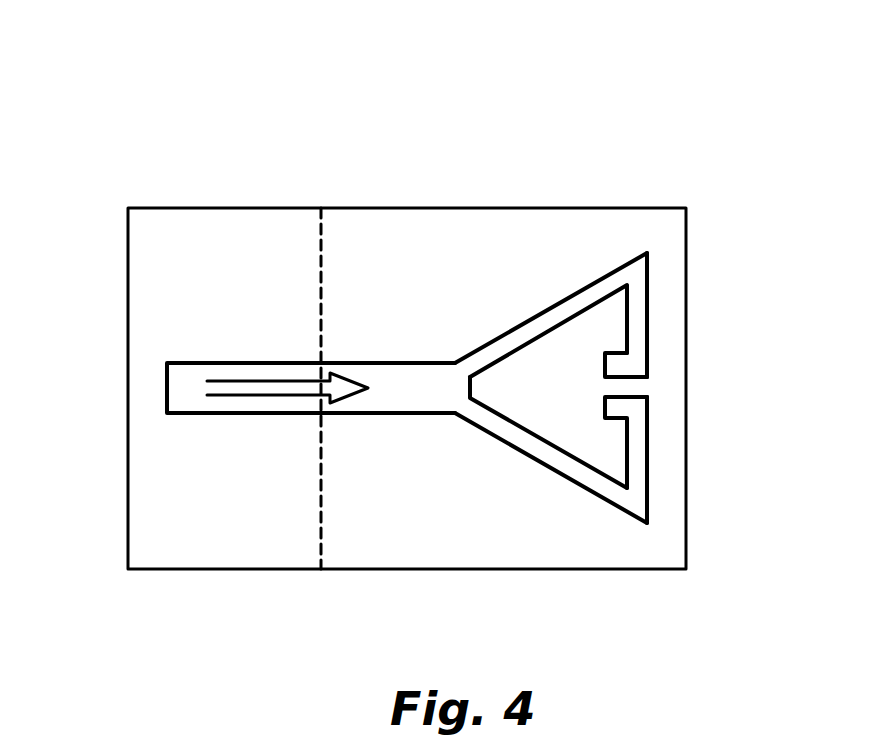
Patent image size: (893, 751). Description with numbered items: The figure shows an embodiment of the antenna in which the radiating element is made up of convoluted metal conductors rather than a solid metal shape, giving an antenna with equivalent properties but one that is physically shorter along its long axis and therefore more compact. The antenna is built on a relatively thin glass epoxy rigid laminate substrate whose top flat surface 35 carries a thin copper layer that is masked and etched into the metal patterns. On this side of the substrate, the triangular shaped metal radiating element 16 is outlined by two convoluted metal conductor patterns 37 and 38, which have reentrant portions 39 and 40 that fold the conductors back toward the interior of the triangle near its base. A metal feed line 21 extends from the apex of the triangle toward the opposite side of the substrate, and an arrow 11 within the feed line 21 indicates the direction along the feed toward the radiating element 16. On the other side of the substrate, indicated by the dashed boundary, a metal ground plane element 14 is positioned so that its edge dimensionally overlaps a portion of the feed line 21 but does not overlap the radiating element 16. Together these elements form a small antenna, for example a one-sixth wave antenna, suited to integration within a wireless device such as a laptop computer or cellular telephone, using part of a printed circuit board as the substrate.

The metal ground plane element 14 is at (165, 287).
The top flat surface 35 is at (394, 228).
The metal feed line 21 is at (199, 366).
The signal direction arrow 11 is at (282, 380).
The convoluted metal conductor pattern 38 is at (524, 327).
The convoluted metal conductor pattern 37 is at (553, 462).
The reentrant portion 39 is at (618, 365).
The reentrant portion 40 is at (623, 403).
The triangular shaped metal radiating element 16 is at (676, 294).